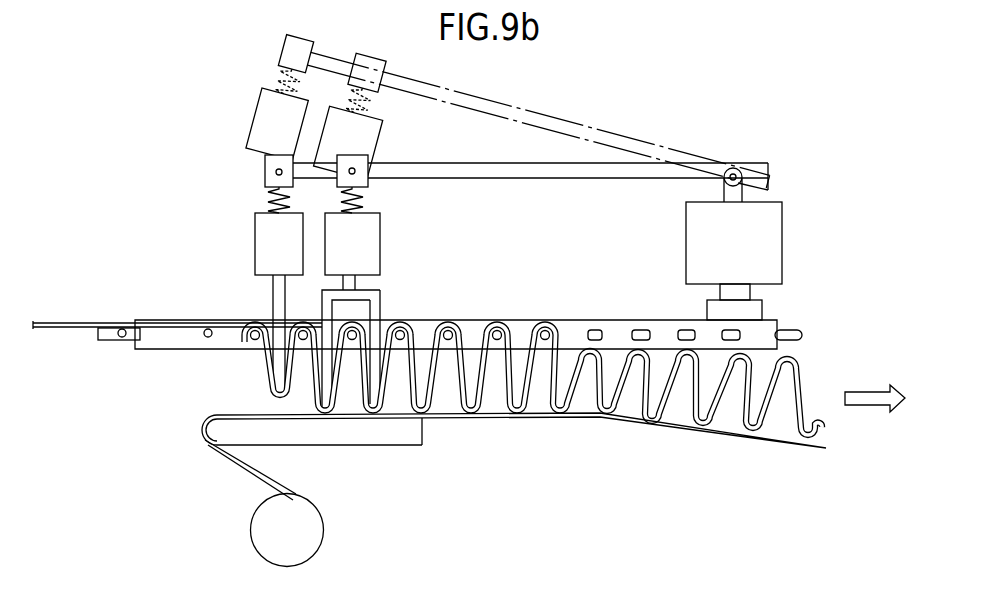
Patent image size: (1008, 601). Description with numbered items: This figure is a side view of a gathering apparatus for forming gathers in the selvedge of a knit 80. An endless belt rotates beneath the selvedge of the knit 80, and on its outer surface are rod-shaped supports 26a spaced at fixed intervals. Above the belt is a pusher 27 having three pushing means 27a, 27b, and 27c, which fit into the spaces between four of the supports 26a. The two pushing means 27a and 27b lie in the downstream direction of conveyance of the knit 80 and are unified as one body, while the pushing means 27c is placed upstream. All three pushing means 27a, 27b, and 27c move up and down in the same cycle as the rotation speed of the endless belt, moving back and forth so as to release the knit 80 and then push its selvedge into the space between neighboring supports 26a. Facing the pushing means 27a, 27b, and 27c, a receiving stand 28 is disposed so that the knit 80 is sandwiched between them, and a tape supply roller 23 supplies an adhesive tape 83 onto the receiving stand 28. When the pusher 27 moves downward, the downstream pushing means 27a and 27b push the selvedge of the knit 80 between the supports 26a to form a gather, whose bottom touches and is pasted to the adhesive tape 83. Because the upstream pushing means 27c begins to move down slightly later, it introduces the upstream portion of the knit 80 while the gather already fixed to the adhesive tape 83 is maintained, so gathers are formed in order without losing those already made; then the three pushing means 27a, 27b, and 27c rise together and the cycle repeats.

The pusher 27 is at (213, 224).
The pushing means 27a is at (378, 409).
The pushing means 27b is at (324, 412).
The pushing means 27c is at (278, 303).
The rod-shaped supports 26a is at (798, 307).
The receiving stand 28 is at (423, 422).
The knit 80 is at (65, 328).
The adhesive tape 83 is at (201, 430).
The tape supply roller 23 is at (259, 538).